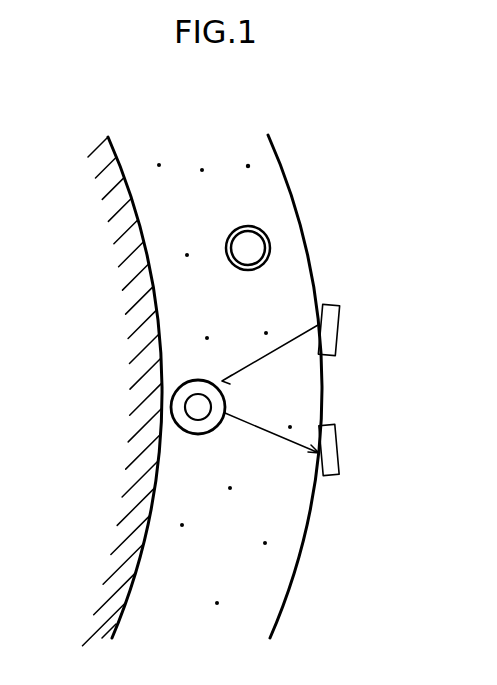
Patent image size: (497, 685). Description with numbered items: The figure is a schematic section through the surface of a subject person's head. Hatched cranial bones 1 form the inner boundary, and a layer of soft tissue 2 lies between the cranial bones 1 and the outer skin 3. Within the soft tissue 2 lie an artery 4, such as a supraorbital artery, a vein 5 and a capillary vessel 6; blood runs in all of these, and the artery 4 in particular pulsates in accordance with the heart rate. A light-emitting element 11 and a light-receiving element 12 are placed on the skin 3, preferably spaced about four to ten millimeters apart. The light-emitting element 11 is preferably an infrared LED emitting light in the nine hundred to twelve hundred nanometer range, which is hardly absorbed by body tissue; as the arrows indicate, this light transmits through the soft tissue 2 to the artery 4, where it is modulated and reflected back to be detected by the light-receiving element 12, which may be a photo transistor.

The cranial bones 1 is at (125, 575).
The soft tissue 2 is at (197, 138).
The skin 3 is at (300, 560).
The artery 4 is at (180, 385).
The vein 5 is at (270, 245).
The capillary vessel 6 is at (248, 166).
The light-emitting element 11 is at (338, 335).
The light-receiving element 12 is at (338, 455).